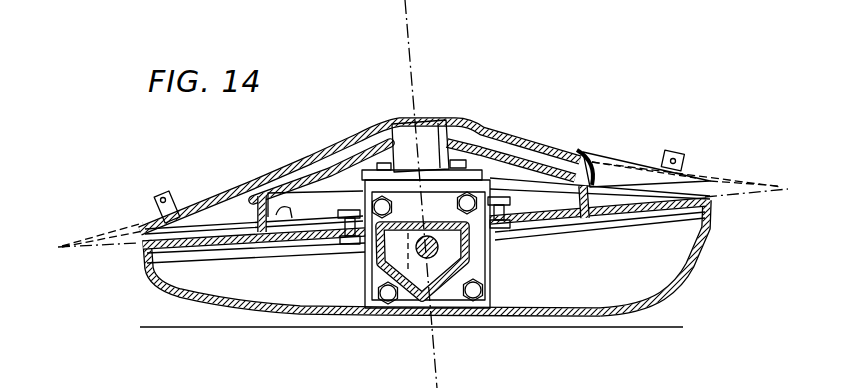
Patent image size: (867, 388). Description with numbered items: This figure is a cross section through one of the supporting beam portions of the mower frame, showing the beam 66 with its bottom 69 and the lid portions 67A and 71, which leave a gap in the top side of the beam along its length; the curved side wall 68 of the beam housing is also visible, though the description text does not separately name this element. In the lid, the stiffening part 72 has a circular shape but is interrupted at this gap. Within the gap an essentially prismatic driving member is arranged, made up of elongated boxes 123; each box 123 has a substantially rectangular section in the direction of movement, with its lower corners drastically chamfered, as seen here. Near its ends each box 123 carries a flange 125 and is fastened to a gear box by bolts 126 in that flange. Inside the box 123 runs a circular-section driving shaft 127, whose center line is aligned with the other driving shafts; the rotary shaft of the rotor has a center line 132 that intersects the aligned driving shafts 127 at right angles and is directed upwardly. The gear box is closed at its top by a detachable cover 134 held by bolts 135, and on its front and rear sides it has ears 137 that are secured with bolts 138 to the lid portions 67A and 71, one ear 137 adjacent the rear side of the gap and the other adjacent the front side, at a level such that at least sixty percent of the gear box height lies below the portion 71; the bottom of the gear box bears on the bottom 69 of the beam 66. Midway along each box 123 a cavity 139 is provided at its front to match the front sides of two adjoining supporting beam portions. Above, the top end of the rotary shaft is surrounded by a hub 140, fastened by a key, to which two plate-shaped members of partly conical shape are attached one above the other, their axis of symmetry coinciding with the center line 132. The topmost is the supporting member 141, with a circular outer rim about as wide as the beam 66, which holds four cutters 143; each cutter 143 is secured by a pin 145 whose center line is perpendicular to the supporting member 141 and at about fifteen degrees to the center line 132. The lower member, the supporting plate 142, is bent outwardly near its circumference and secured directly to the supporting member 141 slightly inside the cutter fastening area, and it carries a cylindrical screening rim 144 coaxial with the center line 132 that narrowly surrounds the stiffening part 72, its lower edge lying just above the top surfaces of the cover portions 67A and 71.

The beam 66 is at (272, 297).
The housing side wall 68 is at (684, 282).
The bottom of the beam 69 is at (584, 316).
The lid portion 71 is at (248, 243).
The lid portion 67A is at (657, 220).
The stiffening part 72 is at (281, 215).
The box 123 is at (385, 270).
The flange 125 is at (458, 305).
The bolts 126 is at (458, 203).
The driving shaft 127 is at (440, 252).
The center line 132 is at (410, 28).
The detachable cover 134 is at (370, 150).
The bolts 135 is at (462, 162).
The ears 137 is at (589, 157).
The bolts 138 is at (494, 197).
The cavity 139 is at (388, 256).
The hub 140 is at (424, 138).
The supporting member 141 is at (288, 166).
The supporting plate 142 is at (318, 158).
The cutter 143 is at (81, 229).
The screening rim 144 is at (250, 196).
The pin 145 is at (176, 194).